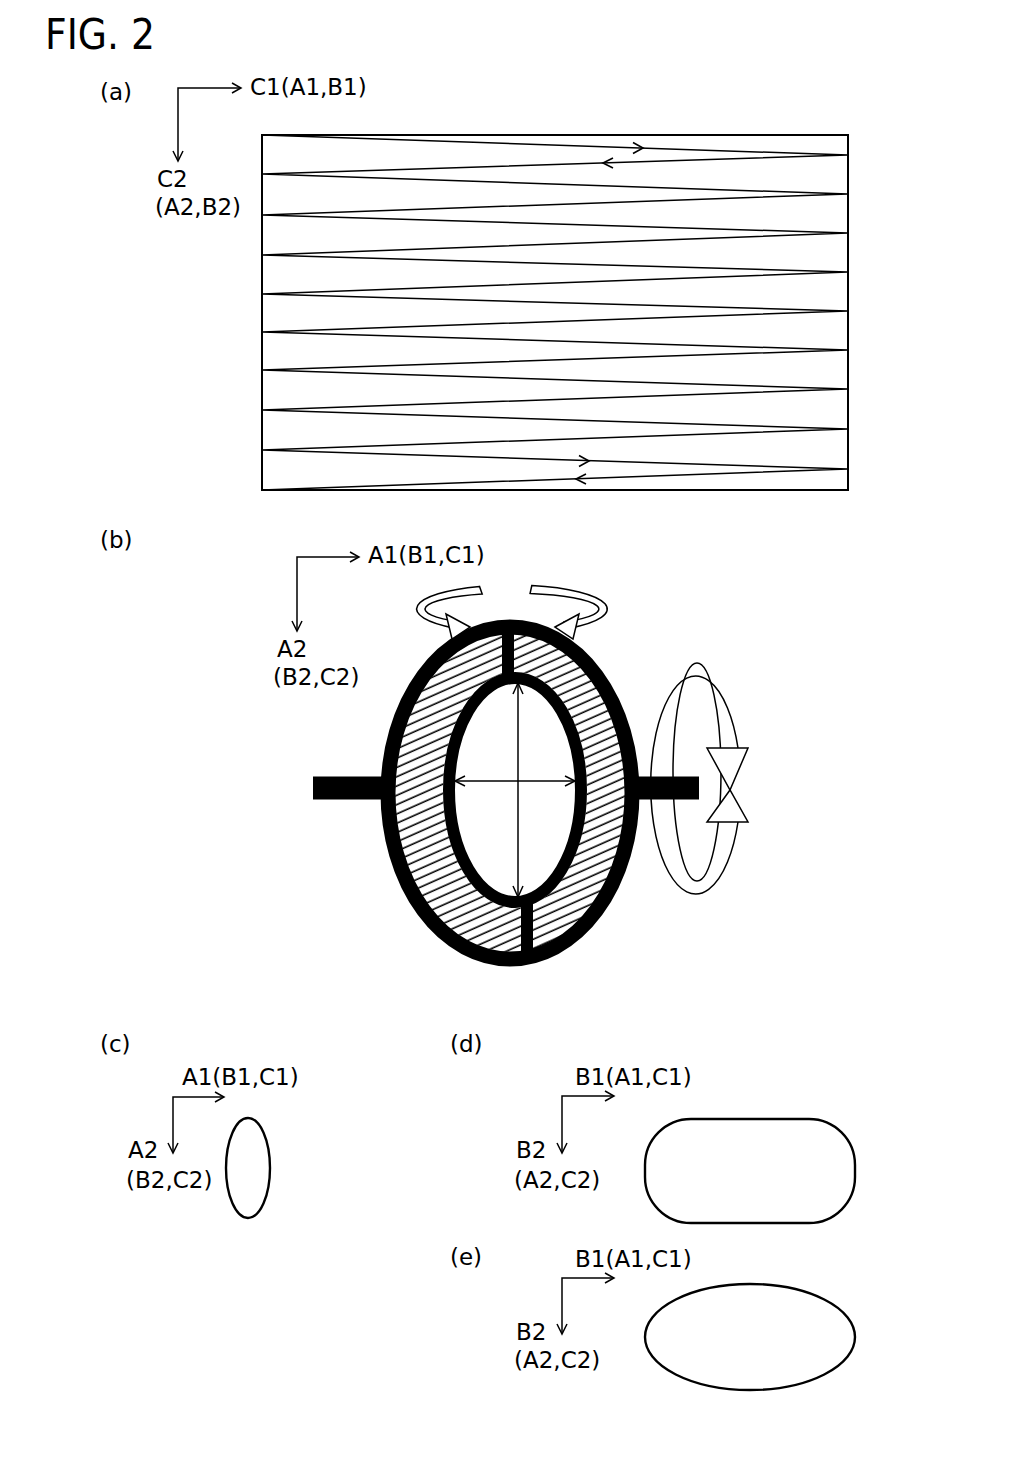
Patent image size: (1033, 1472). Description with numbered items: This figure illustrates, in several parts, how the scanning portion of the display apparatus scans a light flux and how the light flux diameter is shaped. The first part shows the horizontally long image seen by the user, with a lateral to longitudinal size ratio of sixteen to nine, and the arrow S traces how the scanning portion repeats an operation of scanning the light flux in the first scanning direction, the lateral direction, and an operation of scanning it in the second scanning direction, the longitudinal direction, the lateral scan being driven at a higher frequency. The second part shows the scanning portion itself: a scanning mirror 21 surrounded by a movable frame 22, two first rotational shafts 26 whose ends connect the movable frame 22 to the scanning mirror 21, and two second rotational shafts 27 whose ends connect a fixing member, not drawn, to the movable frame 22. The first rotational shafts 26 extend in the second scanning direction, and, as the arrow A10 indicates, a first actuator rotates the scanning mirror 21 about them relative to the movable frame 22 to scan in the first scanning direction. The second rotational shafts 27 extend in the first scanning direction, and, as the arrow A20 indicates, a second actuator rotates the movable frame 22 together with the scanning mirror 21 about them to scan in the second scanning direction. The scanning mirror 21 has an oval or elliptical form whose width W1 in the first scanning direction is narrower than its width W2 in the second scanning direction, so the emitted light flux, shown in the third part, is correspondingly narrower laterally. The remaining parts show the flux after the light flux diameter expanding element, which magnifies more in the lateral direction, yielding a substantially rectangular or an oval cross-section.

The arrow S is at (577, 143).
The scanning mirror 21 is at (548, 852).
The movable frame 22 is at (467, 870).
The first rotational shafts 26 is at (512, 655).
The second rotational shafts 27 is at (338, 795).
The width in the first scanning direction W1 is at (515, 795).
The width in the second scanning direction W2 is at (501, 790).
The arrow A10 is at (600, 601).
The arrow A20 is at (725, 712).